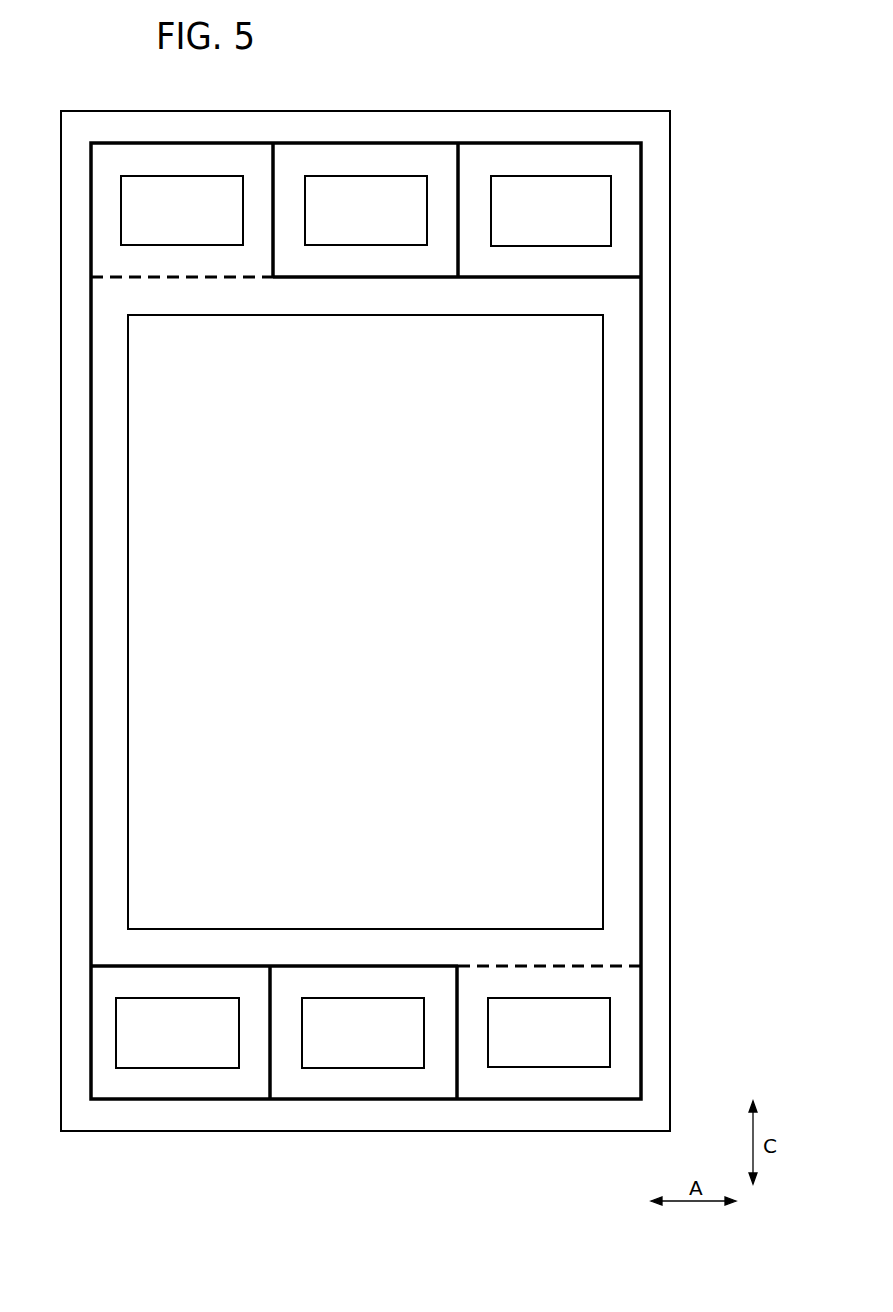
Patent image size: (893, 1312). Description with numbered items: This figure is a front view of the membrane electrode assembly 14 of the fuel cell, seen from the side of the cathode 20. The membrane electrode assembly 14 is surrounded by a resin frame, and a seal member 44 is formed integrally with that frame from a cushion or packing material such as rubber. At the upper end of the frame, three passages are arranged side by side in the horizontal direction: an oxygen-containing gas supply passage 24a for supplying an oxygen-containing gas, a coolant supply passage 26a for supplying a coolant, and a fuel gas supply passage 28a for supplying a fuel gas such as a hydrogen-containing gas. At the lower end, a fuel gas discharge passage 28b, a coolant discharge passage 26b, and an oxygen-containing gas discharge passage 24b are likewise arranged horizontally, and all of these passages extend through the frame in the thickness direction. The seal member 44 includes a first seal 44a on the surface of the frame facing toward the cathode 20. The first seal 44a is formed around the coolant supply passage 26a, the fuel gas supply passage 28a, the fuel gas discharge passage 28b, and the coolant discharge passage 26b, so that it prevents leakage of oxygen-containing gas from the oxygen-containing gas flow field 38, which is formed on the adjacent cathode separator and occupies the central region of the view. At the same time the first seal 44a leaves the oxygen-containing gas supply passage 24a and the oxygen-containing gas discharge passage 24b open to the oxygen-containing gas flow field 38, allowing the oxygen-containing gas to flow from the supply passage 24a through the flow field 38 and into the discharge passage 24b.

The membrane electrode assembly 14 is at (601, 74).
The seal member 44 is at (636, 110).
The first seal 44a is at (417, 142).
The cathode 20 is at (446, 622).
The oxygen-containing gas flow field 38 is at (565, 481).
The oxygen-containing gas supply passage 24a is at (182, 210).
The coolant supply passage 26a is at (366, 210).
The fuel gas supply passage 28a is at (551, 211).
The fuel gas discharge passage 28b is at (177, 1033).
The coolant discharge passage 26b is at (363, 1033).
The oxygen-containing gas discharge passage 24b is at (549, 1032).